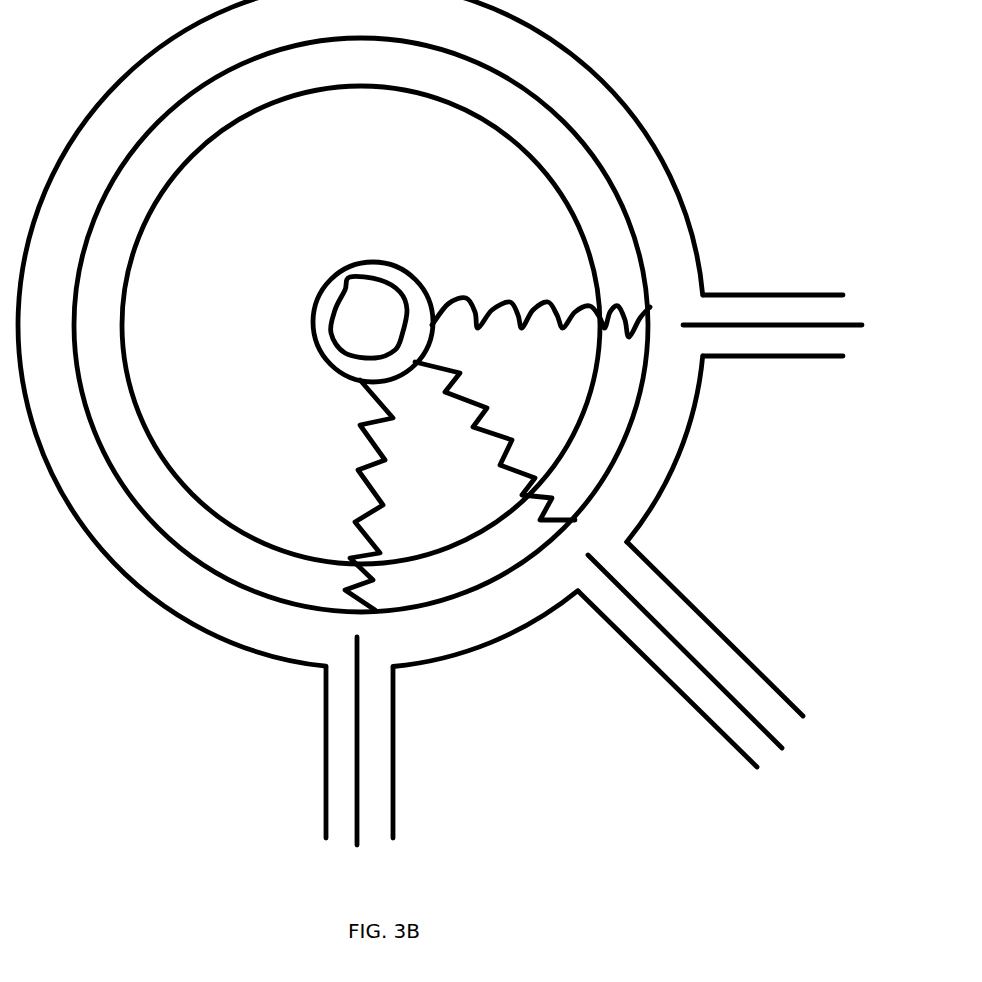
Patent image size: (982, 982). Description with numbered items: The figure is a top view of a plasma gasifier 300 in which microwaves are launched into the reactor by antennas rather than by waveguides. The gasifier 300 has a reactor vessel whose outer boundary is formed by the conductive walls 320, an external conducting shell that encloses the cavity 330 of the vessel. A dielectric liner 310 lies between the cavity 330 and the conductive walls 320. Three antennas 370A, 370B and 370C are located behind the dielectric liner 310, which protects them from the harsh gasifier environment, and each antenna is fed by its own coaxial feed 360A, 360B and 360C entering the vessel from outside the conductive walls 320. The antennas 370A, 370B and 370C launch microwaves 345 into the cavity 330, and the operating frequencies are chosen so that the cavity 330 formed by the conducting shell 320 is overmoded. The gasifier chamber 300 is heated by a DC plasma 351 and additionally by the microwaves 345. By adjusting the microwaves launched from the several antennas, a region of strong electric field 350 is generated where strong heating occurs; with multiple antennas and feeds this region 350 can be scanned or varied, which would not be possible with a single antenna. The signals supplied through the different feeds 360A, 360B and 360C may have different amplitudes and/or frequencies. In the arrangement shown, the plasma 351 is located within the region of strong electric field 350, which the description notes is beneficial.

The gasifier 300 is at (176, 721).
The dielectric liner 310 is at (443, 98).
The conductive walls 320 is at (638, 118).
The cavity 330 is at (361, 325).
The microwaves 345 is at (505, 253).
The region of strong electric field 350 is at (313, 298).
The DC plasma 351 is at (369, 317).
The coaxial feed 360A is at (363, 773).
The coaxial feed 360B is at (709, 654).
The coaxial feed 360C is at (795, 325).
The antenna 370A is at (360, 637).
The antenna 370B is at (590, 556).
The antenna 370C is at (683, 327).